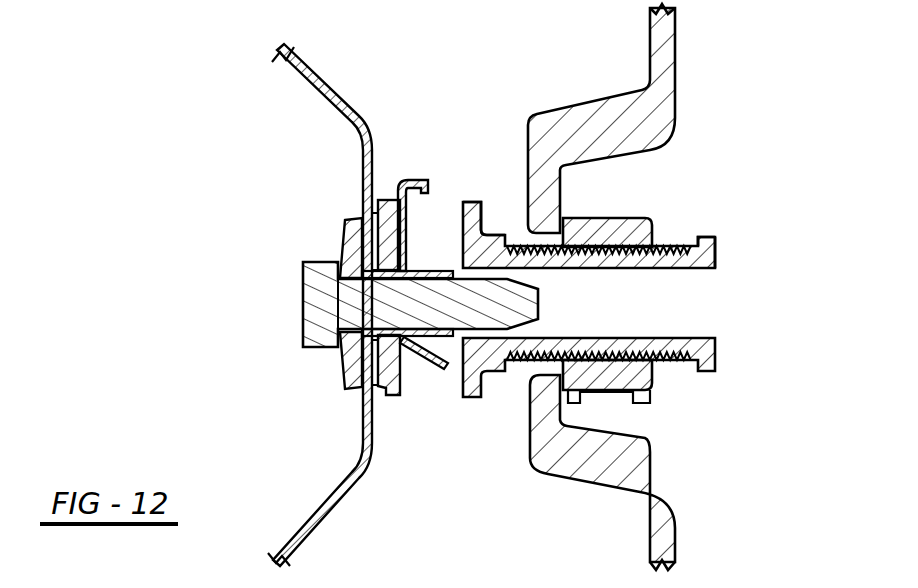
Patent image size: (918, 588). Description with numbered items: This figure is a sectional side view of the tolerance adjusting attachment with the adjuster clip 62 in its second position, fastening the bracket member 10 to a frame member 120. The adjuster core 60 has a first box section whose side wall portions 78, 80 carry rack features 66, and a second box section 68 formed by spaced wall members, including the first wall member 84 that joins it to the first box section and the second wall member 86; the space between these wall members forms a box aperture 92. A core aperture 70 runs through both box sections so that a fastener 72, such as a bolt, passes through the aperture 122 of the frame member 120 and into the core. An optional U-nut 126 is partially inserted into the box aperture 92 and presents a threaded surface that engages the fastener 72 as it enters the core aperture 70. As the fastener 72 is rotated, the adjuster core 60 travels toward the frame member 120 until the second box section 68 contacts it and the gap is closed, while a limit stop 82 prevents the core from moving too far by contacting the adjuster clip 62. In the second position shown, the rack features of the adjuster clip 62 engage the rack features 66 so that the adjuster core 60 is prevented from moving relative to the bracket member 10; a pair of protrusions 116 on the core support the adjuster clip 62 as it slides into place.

The bracket member 10 is at (660, 62).
The adjuster core 60 is at (484, 416).
The adjuster clip 62 is at (640, 218).
The rack features 66 is at (684, 240).
The second box section 68 is at (420, 382).
The core aperture 70 is at (693, 268).
The fastener 72 is at (310, 277).
The side wall portion 78 is at (630, 346).
The side wall portion 80 is at (641, 258).
The limit stop 82 is at (717, 238).
The first wall member 84 is at (476, 218).
The second wall member 86 is at (389, 200).
The box aperture 92 is at (453, 225).
The protrusions 116 is at (640, 402).
The frame member 120 is at (323, 90).
The aperture 122 is at (372, 265).
The U-nut 126 is at (422, 178).